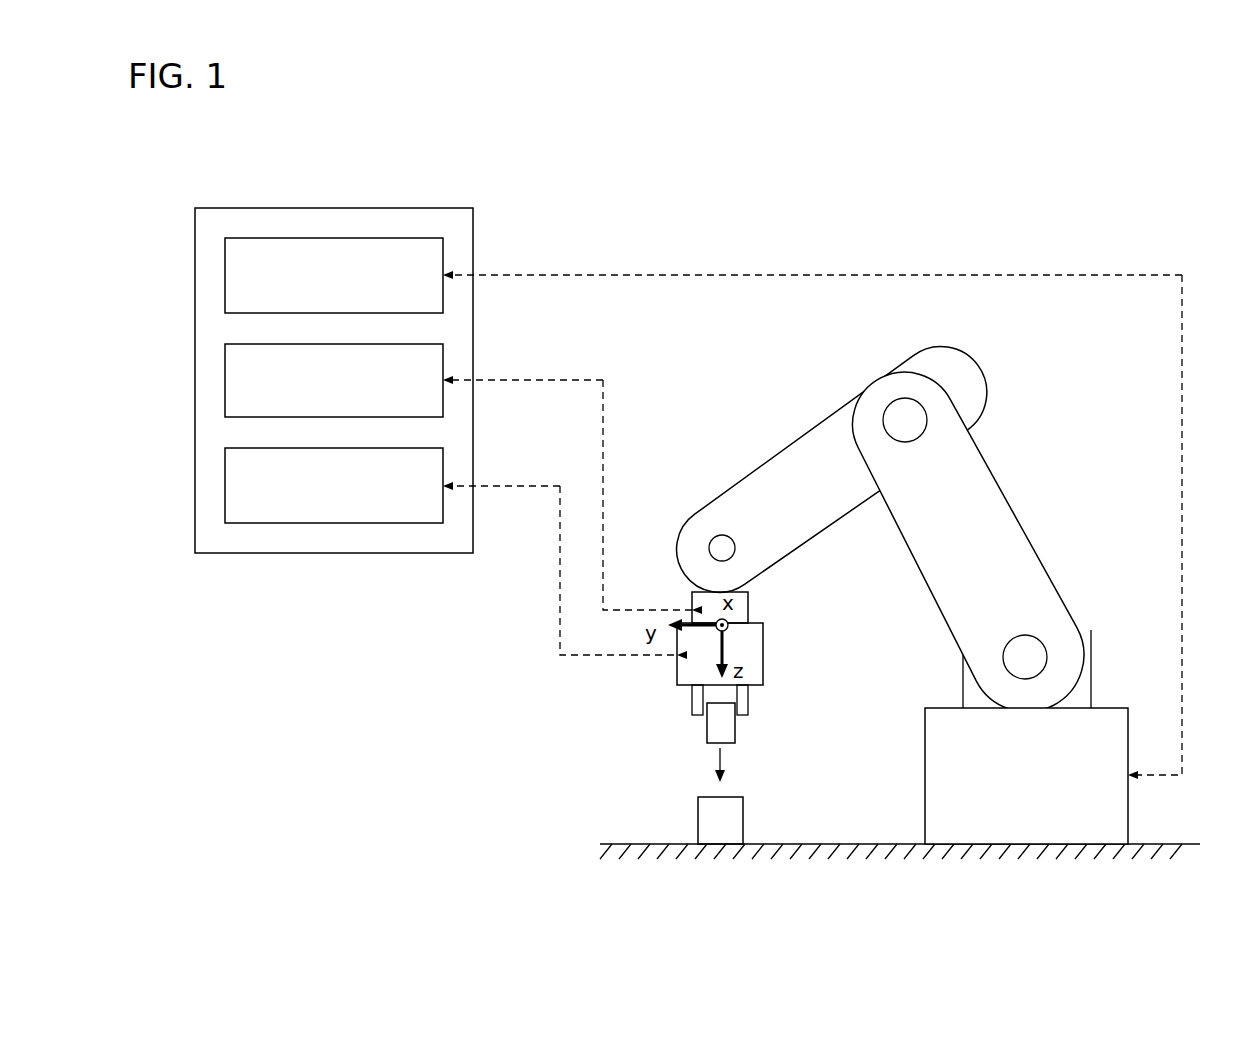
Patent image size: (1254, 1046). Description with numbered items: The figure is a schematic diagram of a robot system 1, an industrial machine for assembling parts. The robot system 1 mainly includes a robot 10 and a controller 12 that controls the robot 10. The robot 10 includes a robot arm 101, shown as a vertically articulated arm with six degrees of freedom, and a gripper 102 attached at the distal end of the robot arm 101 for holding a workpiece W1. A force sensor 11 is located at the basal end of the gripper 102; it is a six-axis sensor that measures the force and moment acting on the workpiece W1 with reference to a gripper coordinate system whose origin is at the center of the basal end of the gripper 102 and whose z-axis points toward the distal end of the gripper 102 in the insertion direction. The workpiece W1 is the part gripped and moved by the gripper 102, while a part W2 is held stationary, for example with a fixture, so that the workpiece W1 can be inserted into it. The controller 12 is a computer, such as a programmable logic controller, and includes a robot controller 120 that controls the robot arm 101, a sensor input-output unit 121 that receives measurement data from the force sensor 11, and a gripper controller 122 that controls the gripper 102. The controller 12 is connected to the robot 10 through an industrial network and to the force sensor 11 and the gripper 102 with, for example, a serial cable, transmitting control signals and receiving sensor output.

The robot system 1 is at (956, 214).
The robot 10 is at (1004, 503).
The robot arm 101 is at (772, 460).
The gripper 102 is at (768, 652).
The force sensor 11 is at (752, 612).
The controller 12 is at (392, 207).
The robot controller 120 is at (225, 280).
The sensor input-output unit 121 is at (225, 385).
The gripper controller 122 is at (225, 487).
The workpiece W1 is at (705, 728).
The part W2 is at (698, 818).